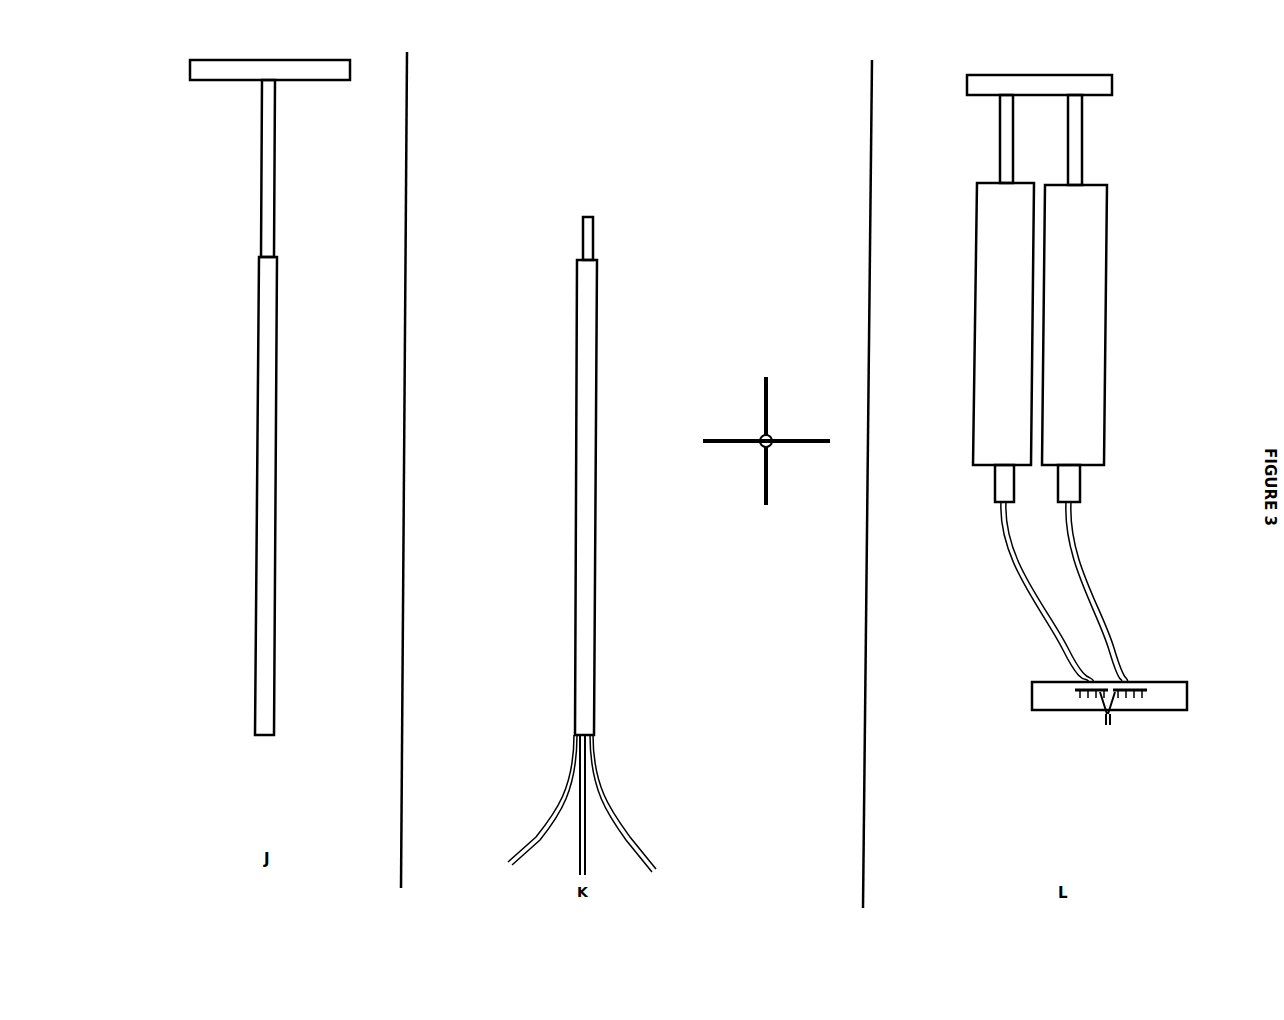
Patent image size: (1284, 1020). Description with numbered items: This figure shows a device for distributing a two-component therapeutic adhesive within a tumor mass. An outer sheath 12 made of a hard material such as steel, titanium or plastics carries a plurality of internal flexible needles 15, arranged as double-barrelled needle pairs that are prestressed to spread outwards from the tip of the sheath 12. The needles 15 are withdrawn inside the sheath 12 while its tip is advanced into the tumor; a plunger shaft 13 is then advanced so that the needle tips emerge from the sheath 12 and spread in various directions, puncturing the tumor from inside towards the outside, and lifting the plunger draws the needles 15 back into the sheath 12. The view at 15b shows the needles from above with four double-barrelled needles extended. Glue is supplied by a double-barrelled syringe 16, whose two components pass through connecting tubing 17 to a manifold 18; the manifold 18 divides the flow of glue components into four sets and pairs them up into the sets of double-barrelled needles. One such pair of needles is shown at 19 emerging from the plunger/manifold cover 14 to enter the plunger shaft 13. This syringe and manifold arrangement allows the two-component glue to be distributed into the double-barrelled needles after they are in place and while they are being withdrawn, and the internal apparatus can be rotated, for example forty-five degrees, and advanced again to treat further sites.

The sheath 12 is at (265, 430).
The plunger shaft 13 is at (264, 173).
The plunger/manifold cover 14 is at (199, 66).
The needles 15 is at (597, 795).
The needles viewed from above 15b is at (744, 459).
The double-barrelled syringe 16 is at (1108, 292).
The connecting tubing 17 is at (1080, 572).
The manifold 18 is at (1142, 684).
The pair of needles 19 is at (1103, 715).